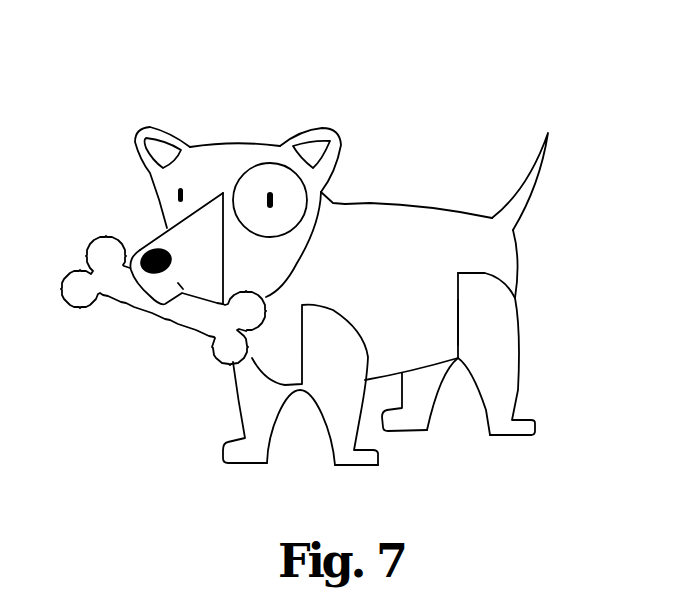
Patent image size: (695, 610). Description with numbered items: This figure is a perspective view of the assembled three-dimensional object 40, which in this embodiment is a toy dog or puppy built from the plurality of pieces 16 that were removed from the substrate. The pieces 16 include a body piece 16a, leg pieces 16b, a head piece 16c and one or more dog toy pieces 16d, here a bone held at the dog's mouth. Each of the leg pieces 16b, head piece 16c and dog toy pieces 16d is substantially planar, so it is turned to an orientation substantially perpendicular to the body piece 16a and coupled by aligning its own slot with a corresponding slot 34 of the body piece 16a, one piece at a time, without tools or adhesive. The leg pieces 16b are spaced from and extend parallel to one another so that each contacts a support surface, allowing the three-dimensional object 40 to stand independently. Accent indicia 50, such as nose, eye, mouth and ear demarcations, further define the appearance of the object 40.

The three-dimensional object 40 is at (103, 82).
The plurality of pieces 16 is at (507, 255).
The body piece 16a is at (398, 217).
The leg pieces 16b is at (497, 437).
The head piece 16c is at (227, 150).
The dog toy pieces 16d is at (127, 303).
The slots 34 is at (458, 323).
The accent indicia 50 is at (166, 186).